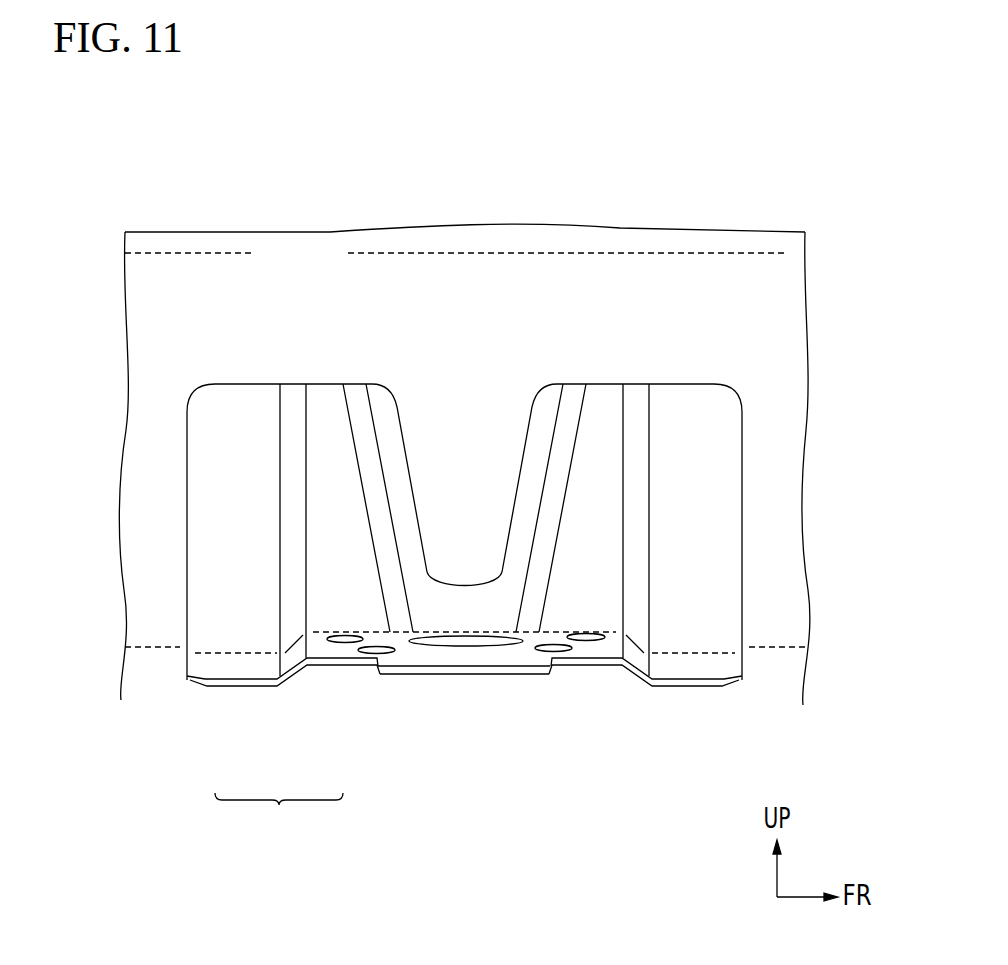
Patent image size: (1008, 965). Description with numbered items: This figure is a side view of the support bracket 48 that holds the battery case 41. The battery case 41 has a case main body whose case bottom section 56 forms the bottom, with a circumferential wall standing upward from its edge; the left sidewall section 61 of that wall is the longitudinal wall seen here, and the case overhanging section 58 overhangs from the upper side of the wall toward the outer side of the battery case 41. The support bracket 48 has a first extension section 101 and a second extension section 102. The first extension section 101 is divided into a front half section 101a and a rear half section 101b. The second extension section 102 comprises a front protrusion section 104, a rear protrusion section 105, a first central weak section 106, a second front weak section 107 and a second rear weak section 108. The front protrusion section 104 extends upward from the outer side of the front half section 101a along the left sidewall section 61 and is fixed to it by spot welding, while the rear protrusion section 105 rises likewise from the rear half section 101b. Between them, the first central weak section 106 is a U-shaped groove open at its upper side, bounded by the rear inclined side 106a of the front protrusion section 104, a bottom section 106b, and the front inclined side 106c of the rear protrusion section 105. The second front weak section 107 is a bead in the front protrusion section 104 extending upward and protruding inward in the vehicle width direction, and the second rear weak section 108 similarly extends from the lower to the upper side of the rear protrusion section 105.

The battery case 41 is at (180, 232).
The support bracket 48 is at (279, 817).
The case bottom section 56 is at (152, 672).
The case overhanging section 58 is at (355, 240).
The left sidewall section 61 is at (693, 298).
The first extension section 101 is at (399, 642).
The front half section 101a is at (703, 667).
The rear half section 101b is at (320, 643).
The second extension section 102 is at (240, 610).
The front protrusion section 104 is at (698, 455).
The rear protrusion section 105 is at (233, 448).
The first central weak section 106 is at (413, 497).
The rear inclined side 106a is at (525, 462).
The bottom section 106b is at (457, 583).
The front inclined side 106c is at (405, 460).
The second front weak section 107 is at (603, 540).
The second rear weak section 108 is at (328, 505).